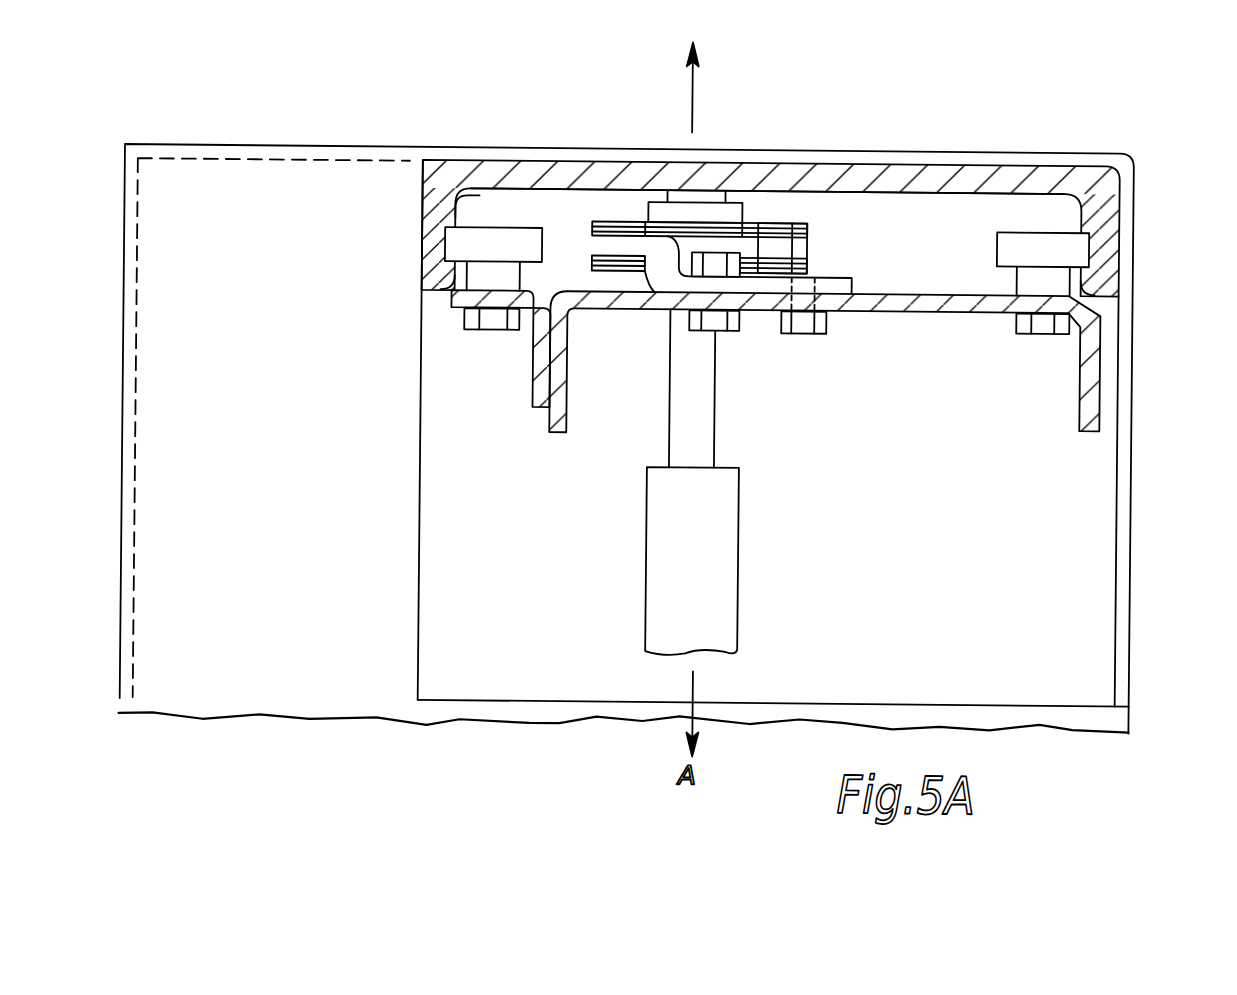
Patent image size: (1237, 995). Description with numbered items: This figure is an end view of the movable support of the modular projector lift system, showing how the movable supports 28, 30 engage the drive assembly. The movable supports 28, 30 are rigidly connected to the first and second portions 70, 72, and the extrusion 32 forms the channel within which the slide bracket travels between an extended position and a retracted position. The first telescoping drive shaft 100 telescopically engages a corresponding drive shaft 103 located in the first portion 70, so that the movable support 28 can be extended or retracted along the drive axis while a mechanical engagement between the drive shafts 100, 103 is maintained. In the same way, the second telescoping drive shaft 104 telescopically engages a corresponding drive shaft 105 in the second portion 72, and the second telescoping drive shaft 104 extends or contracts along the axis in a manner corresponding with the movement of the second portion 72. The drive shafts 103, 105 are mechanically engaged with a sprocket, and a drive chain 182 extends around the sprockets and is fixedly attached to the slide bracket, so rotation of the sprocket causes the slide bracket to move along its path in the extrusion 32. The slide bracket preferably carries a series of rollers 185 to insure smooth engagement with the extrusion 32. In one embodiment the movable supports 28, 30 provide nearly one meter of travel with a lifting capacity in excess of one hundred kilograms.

The movable support 28 is at (771, 195).
The movable support 30 is at (771, 195).
The extrusion 32 is at (820, 166).
The first portion 70 is at (649, 466).
The second portion 72 is at (127, 698).
The first telescoping drive shaft 100 is at (765, 562).
The second telescoping drive shaft 104 is at (734, 577).
The drive shaft 103 is at (777, 389).
The drive shaft 105 is at (708, 392).
The drive chain 182 is at (811, 248).
The rollers 185 is at (481, 232).